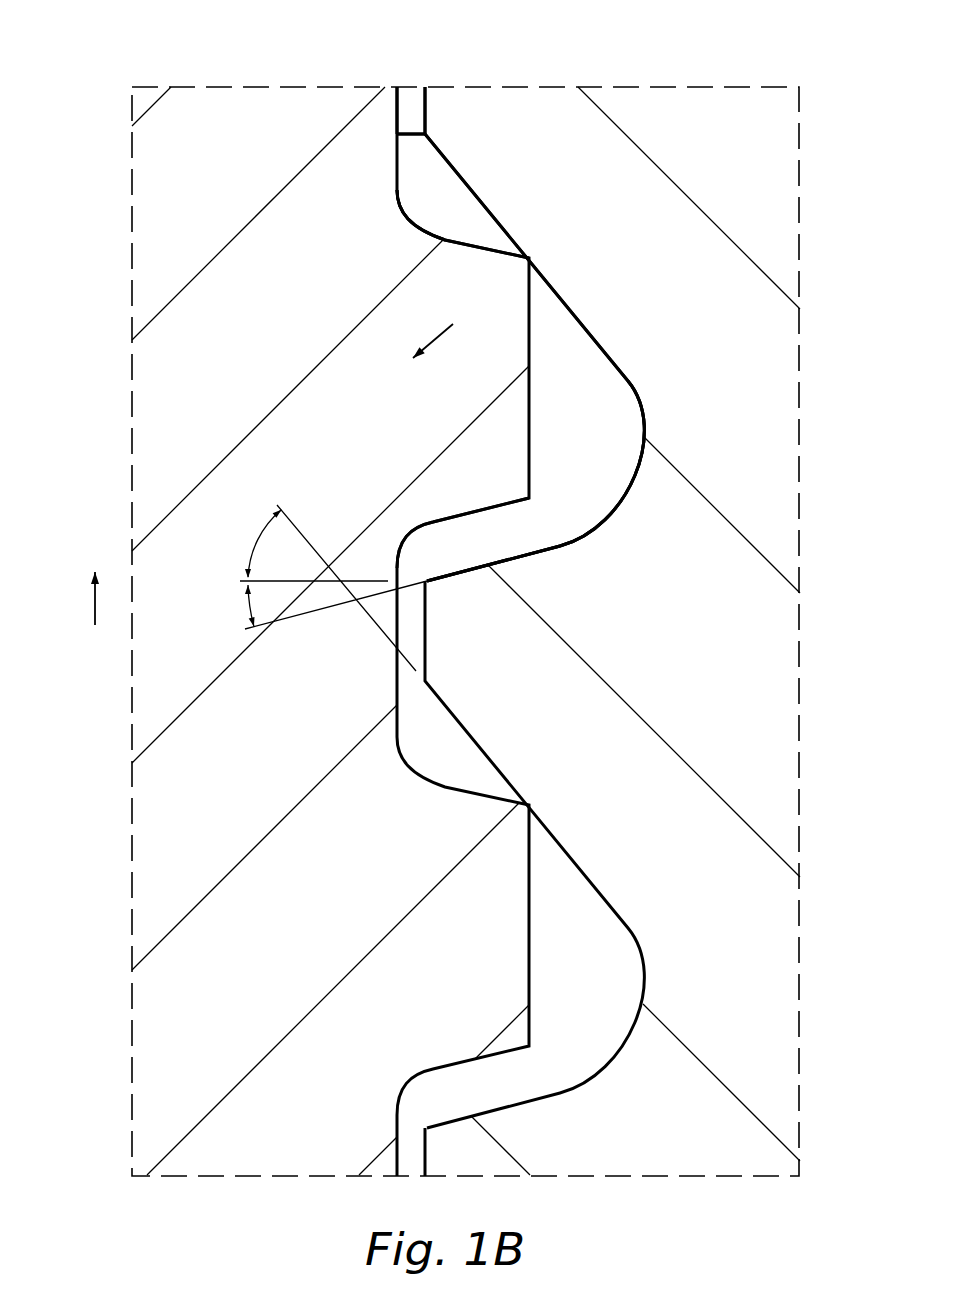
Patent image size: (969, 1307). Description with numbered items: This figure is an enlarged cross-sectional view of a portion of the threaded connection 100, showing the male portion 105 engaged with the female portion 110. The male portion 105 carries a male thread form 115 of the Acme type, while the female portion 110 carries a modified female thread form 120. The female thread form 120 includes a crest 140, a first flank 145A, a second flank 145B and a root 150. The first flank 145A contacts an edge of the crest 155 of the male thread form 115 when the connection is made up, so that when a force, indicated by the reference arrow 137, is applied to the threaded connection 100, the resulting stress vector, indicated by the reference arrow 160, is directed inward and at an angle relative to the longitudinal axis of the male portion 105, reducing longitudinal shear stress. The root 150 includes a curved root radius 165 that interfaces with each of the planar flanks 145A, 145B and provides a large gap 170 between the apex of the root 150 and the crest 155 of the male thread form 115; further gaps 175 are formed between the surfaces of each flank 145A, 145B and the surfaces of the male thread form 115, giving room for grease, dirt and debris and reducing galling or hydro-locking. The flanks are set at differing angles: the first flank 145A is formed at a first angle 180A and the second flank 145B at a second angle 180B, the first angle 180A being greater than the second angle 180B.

The threaded connection 100 is at (577, 38).
The male portion 105 is at (257, 95).
The female portion 110 is at (788, 227).
The male thread form 115 is at (410, 77).
The female thread form 120 is at (474, 77).
The reference arrow 137 is at (95, 607).
The crest 140 is at (418, 113).
The first flank 145A is at (477, 200).
The second flank 145B is at (538, 550).
The root 150 is at (643, 415).
The crest 155 is at (530, 302).
The reference arrow 160 is at (438, 342).
The root radius 165 is at (626, 384).
The gap 170 is at (600, 508).
The gaps 175 is at (430, 187).
The first angle 180A is at (253, 549).
The second angle 180B is at (249, 604).